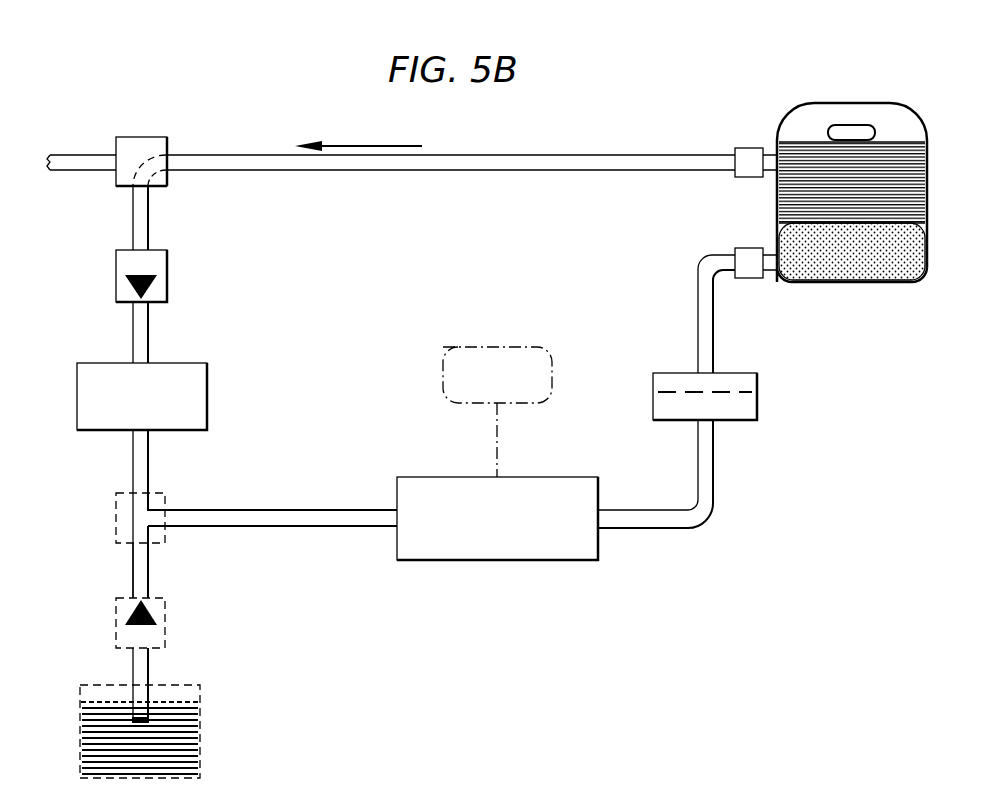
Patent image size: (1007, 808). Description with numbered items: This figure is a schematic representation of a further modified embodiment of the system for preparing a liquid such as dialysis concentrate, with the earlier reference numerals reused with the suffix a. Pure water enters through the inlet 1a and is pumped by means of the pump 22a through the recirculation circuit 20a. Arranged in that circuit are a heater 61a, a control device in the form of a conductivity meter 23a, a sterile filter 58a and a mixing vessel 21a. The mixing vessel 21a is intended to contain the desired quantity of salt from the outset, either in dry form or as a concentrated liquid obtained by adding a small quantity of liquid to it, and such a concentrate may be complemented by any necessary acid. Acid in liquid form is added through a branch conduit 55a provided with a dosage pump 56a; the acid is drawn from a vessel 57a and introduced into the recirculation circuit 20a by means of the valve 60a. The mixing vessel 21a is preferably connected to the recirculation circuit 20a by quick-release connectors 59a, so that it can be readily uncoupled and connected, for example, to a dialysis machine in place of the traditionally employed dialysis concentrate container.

The inlet 1a is at (80, 171).
The recirculation circuit 20a is at (288, 511).
The mixing vessel 21a is at (796, 104).
The pump 22a is at (167, 250).
The conductivity meter 23a is at (532, 477).
The branch conduit 55a is at (150, 565).
The dosage pump 56a is at (165, 630).
The vessel 57a is at (200, 715).
The sterile filter 58a is at (757, 415).
The quick-release connectors 59a is at (735, 150).
The valve 60a is at (165, 493).
The heater 61a is at (207, 363).